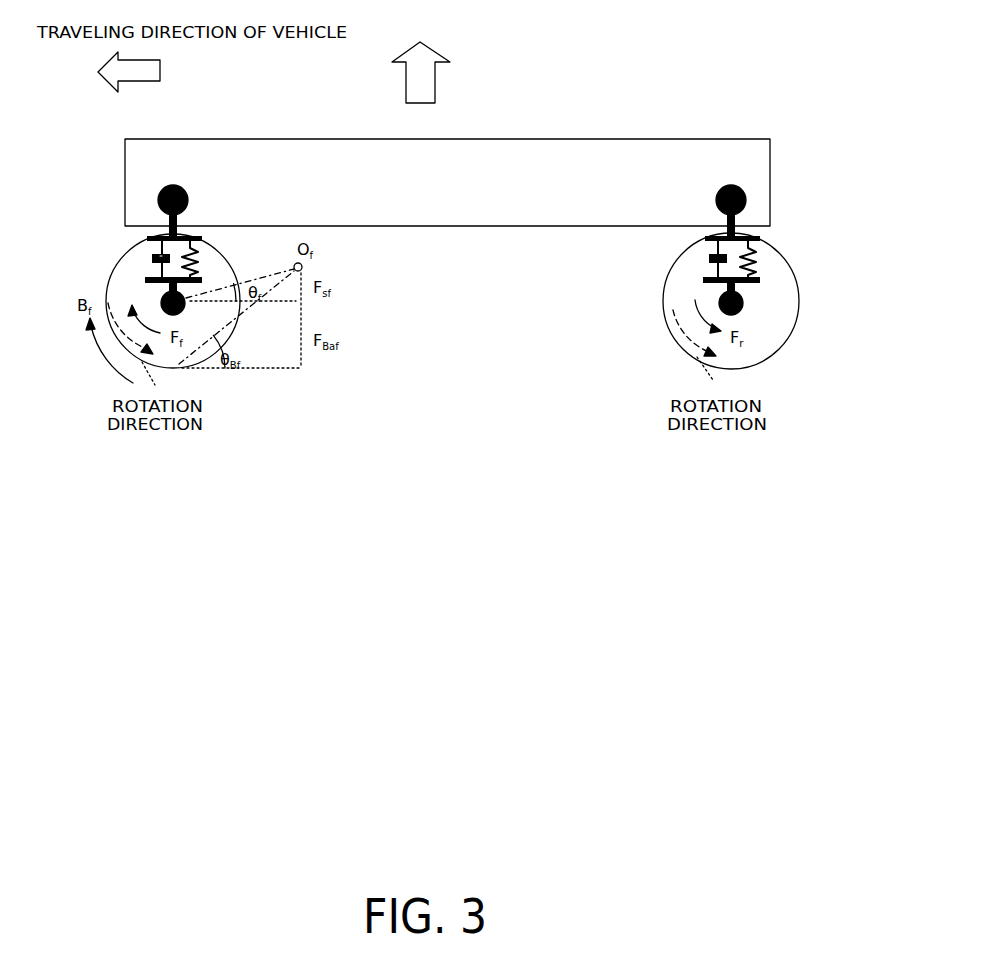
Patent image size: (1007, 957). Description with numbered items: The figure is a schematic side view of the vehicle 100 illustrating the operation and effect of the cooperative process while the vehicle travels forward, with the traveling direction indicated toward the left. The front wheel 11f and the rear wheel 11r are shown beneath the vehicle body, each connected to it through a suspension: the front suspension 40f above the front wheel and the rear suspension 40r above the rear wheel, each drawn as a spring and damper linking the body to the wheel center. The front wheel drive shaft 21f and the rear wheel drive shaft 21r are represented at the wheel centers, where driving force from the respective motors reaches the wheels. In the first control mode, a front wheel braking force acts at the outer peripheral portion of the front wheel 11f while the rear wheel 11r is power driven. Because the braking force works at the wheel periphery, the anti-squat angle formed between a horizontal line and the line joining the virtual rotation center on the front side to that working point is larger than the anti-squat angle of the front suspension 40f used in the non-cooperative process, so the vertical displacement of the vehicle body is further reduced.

The vehicle 100 is at (579, 136).
The front wheels 11f is at (118, 263).
The front wheel drive shaft 21f is at (160, 297).
The front suspension 40f is at (208, 255).
The rear wheels 11r is at (780, 252).
The rear wheel drive shaft 21r is at (745, 297).
The rear suspension 40r is at (700, 257).